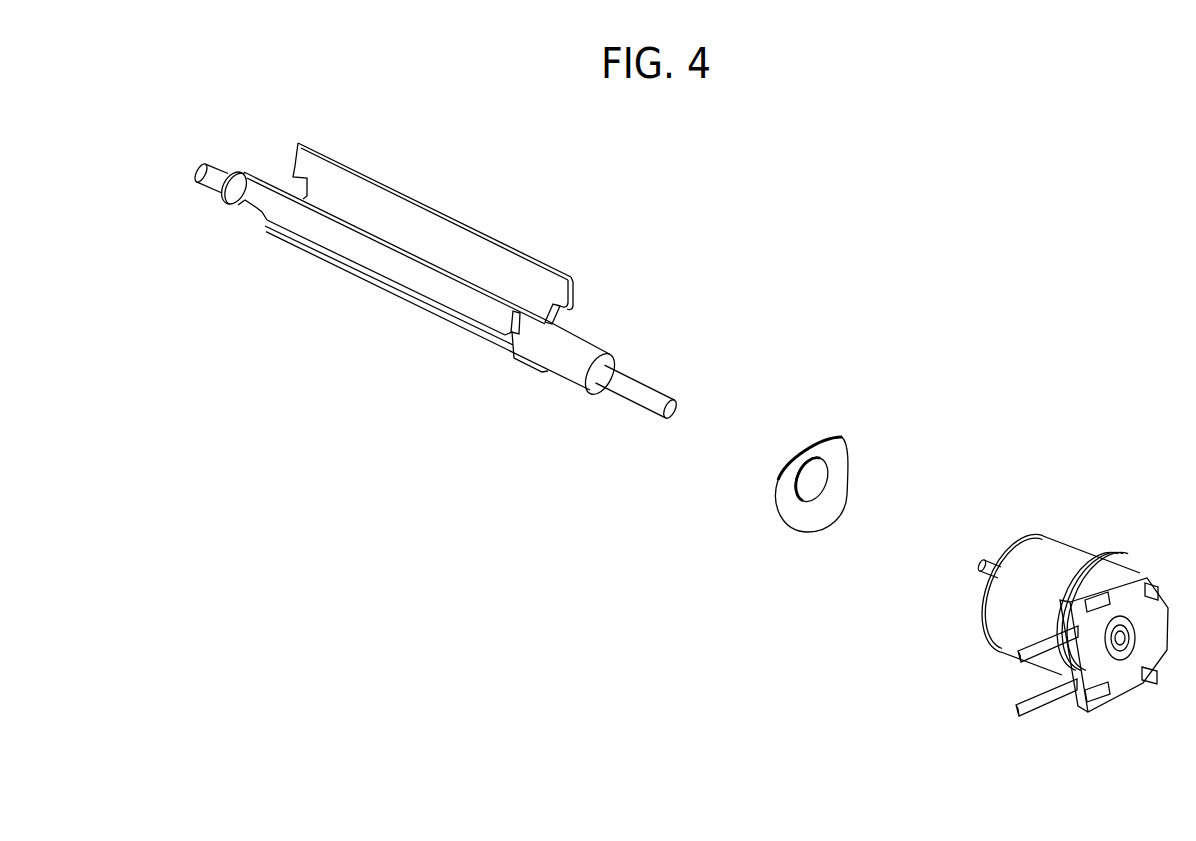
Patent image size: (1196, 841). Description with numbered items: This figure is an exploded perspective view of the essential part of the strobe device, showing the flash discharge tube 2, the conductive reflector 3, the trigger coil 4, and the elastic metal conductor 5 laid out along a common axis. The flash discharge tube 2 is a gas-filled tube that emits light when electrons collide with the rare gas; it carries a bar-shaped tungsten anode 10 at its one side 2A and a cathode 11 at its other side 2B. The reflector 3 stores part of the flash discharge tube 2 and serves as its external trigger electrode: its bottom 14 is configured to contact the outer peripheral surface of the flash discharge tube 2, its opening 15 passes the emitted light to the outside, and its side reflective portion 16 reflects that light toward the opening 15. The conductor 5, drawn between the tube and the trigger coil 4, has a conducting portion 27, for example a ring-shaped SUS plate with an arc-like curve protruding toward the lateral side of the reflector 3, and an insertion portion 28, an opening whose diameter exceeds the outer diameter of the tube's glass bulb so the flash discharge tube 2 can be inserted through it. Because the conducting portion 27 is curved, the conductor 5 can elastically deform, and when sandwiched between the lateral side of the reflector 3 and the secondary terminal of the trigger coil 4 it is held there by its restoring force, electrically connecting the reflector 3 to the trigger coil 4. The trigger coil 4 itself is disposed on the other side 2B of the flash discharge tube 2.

The flash discharge tube 2 is at (638, 408).
The one side 2A is at (235, 205).
The other side 2B is at (593, 355).
The reflector 3 is at (406, 213).
The trigger coil 4 is at (1092, 540).
The conductor 5 is at (838, 425).
The anode 10 is at (213, 175).
The cathode 11 is at (642, 392).
The bottom 14 is at (382, 295).
The opening 15 is at (357, 205).
The side reflective portion 16 is at (384, 180).
The conducting portion 27 is at (838, 480).
The insertion portion 28 is at (808, 440).